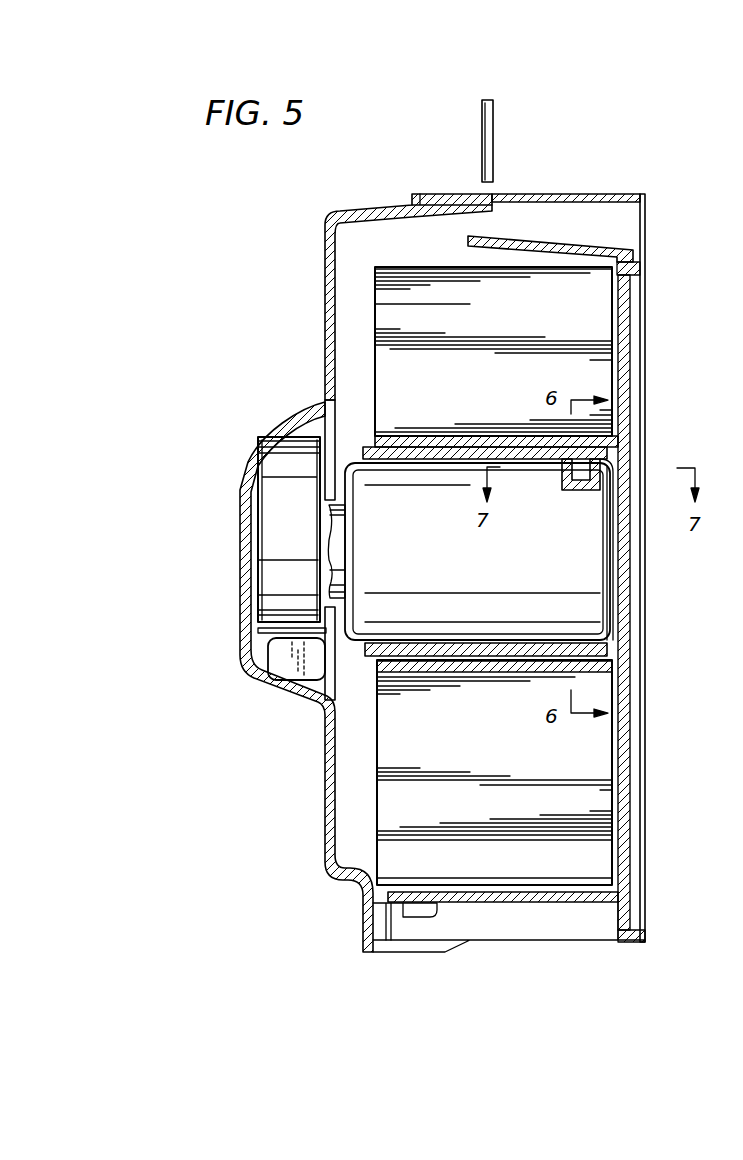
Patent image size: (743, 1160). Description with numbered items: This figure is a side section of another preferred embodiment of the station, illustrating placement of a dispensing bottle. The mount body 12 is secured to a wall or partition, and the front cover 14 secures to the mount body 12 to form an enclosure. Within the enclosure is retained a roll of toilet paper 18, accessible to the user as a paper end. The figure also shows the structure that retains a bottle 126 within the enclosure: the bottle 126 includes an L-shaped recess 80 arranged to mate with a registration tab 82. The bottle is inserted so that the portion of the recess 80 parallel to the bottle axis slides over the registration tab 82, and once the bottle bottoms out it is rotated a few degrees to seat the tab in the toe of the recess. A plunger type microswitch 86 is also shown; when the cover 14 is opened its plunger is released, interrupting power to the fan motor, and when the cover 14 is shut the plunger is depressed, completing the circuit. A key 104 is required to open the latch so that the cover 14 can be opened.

The mount body 12 is at (610, 863).
The front cover 14 is at (322, 300).
The roll of toilet paper 18 is at (602, 315).
The recess 80 is at (538, 492).
The registration tab 82 is at (598, 446).
The plunger type microswitch 86 is at (405, 920).
The key 104 is at (493, 135).
The bottle 126 is at (430, 565).